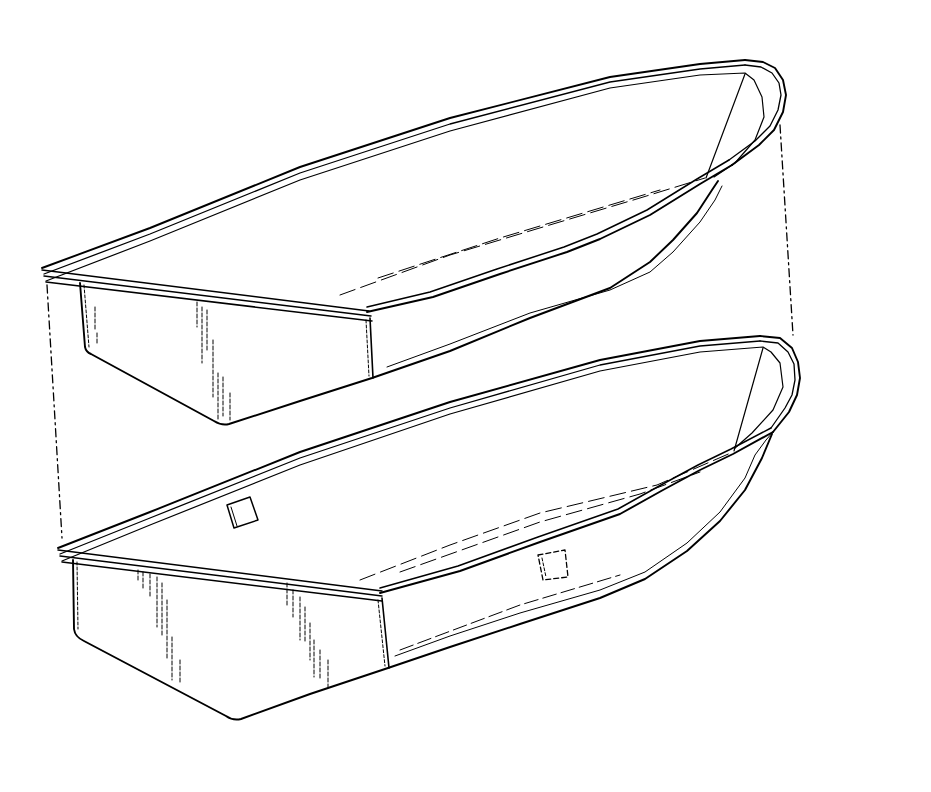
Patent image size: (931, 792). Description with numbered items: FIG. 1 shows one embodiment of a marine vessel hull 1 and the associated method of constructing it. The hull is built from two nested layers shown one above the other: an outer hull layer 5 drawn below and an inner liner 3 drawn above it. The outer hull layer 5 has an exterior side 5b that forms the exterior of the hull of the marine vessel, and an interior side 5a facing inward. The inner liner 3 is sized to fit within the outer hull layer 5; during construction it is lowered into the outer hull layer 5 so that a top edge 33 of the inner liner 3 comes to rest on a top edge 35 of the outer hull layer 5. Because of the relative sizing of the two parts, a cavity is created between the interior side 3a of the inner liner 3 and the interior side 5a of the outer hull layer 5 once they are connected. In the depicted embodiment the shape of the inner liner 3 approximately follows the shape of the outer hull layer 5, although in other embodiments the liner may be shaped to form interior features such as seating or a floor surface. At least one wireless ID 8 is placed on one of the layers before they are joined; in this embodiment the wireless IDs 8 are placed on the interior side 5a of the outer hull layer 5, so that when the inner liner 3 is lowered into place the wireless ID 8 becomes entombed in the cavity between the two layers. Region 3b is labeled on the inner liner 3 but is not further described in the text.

The marine vessel hull 1 is at (197, 149).
The inner liner 3 is at (673, 243).
The interior side of the inner liner 3a is at (720, 198).
The inner surface of inner hull 3b is at (600, 140).
The top edge of the inner liner 33 is at (770, 98).
The outer hull layer 5 is at (687, 551).
The interior side of the outer hull layer 5a is at (673, 402).
The exterior side of the outer hull layer 5b is at (745, 485).
The top edge of the outer hull layer 35 is at (790, 368).
The wireless ID 8 is at (240, 503).